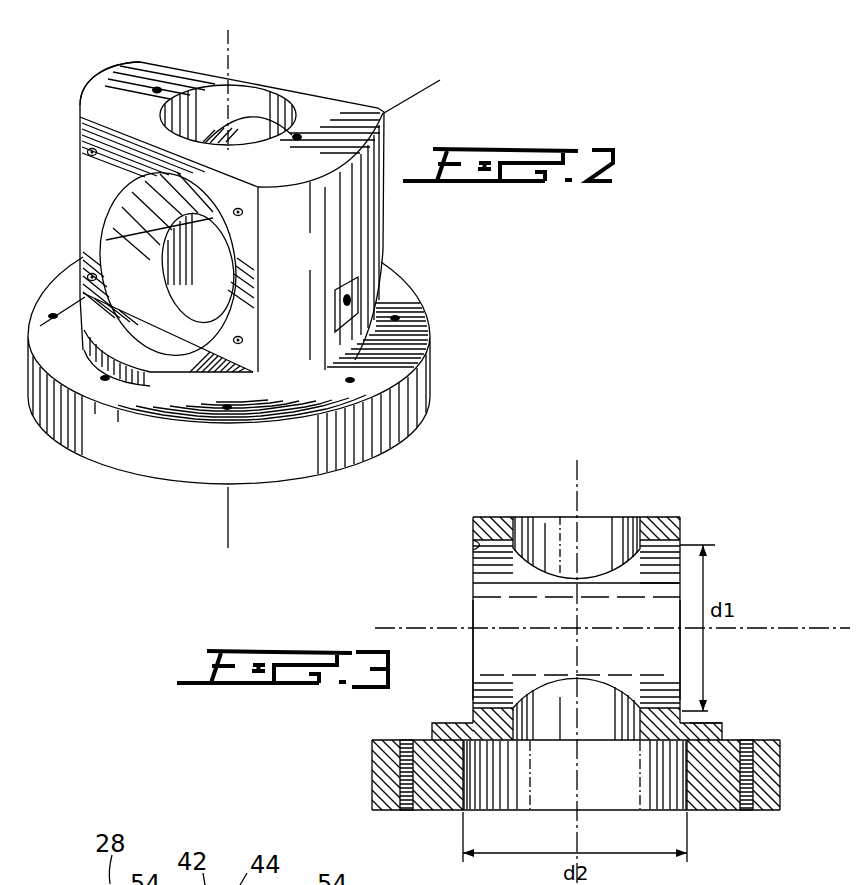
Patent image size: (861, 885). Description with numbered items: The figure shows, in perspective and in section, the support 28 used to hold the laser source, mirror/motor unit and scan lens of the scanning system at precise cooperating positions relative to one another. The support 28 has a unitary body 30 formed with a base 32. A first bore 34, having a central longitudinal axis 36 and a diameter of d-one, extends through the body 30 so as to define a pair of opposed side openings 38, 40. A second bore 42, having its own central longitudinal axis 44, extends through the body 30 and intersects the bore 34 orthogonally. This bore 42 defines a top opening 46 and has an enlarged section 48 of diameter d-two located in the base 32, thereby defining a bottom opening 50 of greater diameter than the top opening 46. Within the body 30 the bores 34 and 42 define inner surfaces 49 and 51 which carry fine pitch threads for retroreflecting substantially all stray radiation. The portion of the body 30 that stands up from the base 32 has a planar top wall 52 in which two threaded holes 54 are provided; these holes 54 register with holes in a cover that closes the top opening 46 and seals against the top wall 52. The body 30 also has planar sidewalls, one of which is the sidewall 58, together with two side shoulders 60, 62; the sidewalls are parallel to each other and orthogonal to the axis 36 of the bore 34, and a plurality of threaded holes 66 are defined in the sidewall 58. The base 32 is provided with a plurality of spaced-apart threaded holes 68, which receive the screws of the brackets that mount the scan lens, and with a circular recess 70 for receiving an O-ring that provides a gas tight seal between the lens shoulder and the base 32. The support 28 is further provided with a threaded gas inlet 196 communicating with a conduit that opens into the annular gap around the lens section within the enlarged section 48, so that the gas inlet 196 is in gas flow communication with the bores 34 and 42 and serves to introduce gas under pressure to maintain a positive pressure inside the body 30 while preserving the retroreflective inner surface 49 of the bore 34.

In FIG. 2, the support 28 is at (362, 60).
In FIG. 3, the support 28 is at (693, 468).
In FIG. 2, the unitary body 30 is at (352, 222).
In FIG. 3, the unitary body 30 is at (686, 527).
In FIG. 2, the base 32 is at (121, 443).
In FIG. 3, the base 32 is at (770, 783).
In FIG. 2, the bore 34 is at (128, 228).
In FIG. 3, the bore 34 is at (497, 617).
In FIG. 2, the central longitudinal axis 36 is at (410, 100).
In FIG. 3, the central longitudinal axis 36 is at (735, 632).
In FIG. 3, the side opening 38 is at (668, 592).
In FIG. 2, the side opening 40 is at (125, 190).
In FIG. 3, the side opening 40 is at (477, 650).
In FIG. 2, the bore 42 is at (255, 113).
In FIG. 3, the bore 42 is at (543, 528).
In FIG. 2, the central longitudinal axis 44 is at (230, 532).
In FIG. 3, the central longitudinal axis 44 is at (580, 462).
In FIG. 2, the top opening 46 is at (205, 90).
In FIG. 3, the top opening 46 is at (603, 528).
In FIG. 3, the enlarged section 48 is at (614, 782).
In FIG. 3, the inner surface 49 is at (473, 555).
In FIG. 3, the bottom opening 50 is at (548, 800).
In FIG. 3, the inner surface 51 is at (635, 712).
In FIG. 2, the planar top wall 52 is at (110, 88).
In FIG. 2, the threaded holes 54 is at (157, 87).
In FIG. 2, the planar sidewall 58 is at (243, 233).
In FIG. 3, the side shoulder 60 is at (717, 722).
In FIG. 2, the side shoulder 62 is at (186, 357).
In FIG. 3, the side shoulder 62 is at (453, 721).
In FIG. 2, the threaded holes 66 is at (87, 150).
In FIG. 2, the threaded holes 68 is at (425, 356).
In FIG. 3, the threaded holes 68 is at (405, 778).
In FIG. 3, the circular recess 70 is at (432, 810).
In FIG. 2, the threaded gas inlet 196 is at (352, 300).